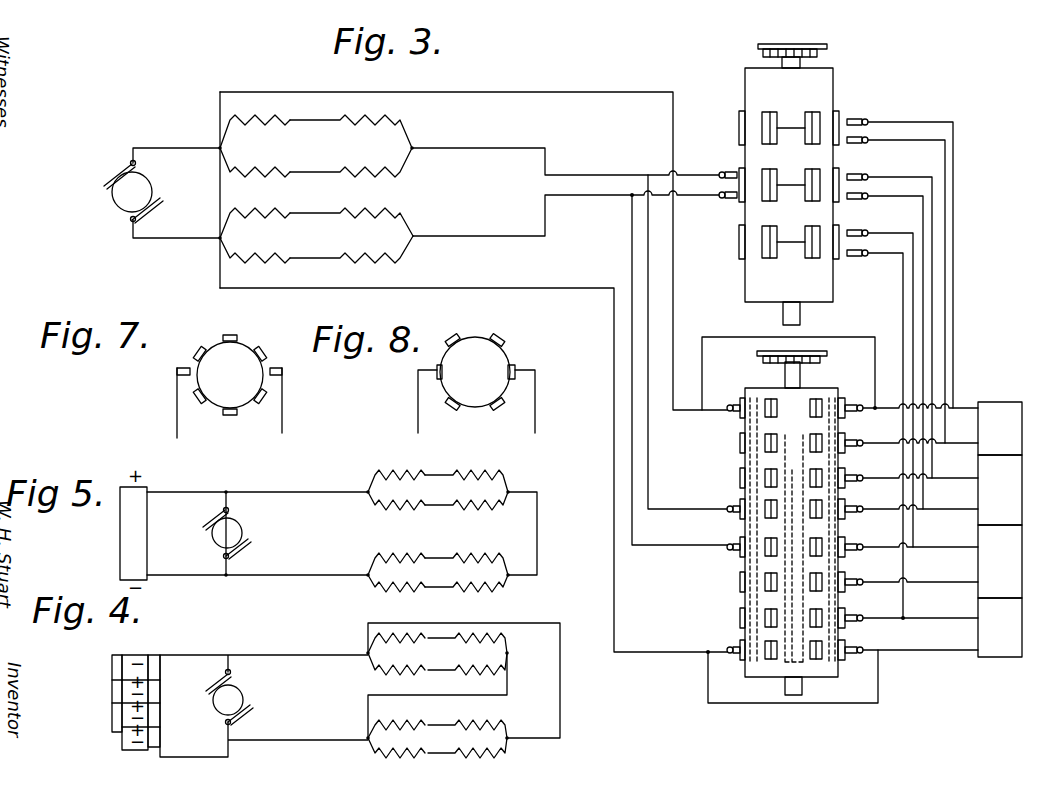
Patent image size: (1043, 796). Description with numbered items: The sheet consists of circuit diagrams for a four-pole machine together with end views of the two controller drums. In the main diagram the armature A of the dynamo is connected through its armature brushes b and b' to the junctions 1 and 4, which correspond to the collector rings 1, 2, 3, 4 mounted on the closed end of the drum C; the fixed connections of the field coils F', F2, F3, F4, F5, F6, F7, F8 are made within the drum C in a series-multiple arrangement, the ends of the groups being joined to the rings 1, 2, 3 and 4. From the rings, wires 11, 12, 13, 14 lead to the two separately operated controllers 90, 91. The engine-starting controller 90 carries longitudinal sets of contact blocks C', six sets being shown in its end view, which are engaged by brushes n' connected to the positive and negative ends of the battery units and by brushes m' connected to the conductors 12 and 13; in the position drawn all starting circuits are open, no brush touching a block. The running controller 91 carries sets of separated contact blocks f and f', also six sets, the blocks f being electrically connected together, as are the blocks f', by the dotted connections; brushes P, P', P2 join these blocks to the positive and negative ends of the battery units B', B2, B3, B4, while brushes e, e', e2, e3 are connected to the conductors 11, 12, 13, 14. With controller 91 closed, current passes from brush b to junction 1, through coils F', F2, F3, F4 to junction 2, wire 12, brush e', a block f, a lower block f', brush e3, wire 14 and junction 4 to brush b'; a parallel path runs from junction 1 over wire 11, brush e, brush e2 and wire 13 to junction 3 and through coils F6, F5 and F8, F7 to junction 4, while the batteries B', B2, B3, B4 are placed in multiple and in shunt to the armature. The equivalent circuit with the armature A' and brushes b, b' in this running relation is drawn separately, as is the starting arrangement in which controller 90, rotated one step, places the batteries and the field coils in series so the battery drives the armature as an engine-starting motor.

In FIG. 3, the collector ring 1 is at (218, 147).
In FIG. 4, the collector ring 1 is at (366, 652).
In FIG. 3, the collector ring 2 is at (414, 135).
In FIG. 5, the collector ring 2 is at (366, 490).
In FIG. 4, the collector ring 2 is at (509, 655).
In FIG. 5, the collector ring 3 is at (510, 578).
In FIG. 4, the collector ring 3 is at (509, 736).
In FIG. 3, the collector ring 4 is at (218, 239).
In FIG. 5, the collector ring 4 is at (366, 576).
In FIG. 4, the collector ring 4 is at (366, 737).
In FIG. 3, the wire 11 is at (578, 85).
In FIG. 3, the wire 12 is at (650, 511).
In FIG. 3, the wire 13 is at (458, 238).
In FIG. 3, the wire 14 is at (628, 652).
In FIG. 3, the engine-starting controller 90 is at (765, 95).
In FIG. 7, the engine-starting controller 90 is at (222, 388).
In FIG. 8, the running controller 91 is at (487, 385).
In FIG. 3, the motor A is at (139, 202).
In FIG. 5, the motor A' is at (239, 533).
In FIG. 3, the armature brush b is at (107, 172).
In FIG. 5, the armature brush b is at (202, 517).
In FIG. 3, the armature brush b' is at (158, 211).
In FIG. 5, the armature brush b' is at (250, 550).
In FIG. 7, the drum C is at (230, 375).
In FIG. 3, the contact block C' is at (778, 189).
In FIG. 3, the brush m' is at (712, 183).
In FIG. 3, the brush n' is at (863, 198).
In FIG. 3, the brush e is at (722, 396).
In FIG. 3, the brush e' is at (722, 498).
In FIG. 3, the brush e2 is at (727, 548).
In FIG. 3, the brush e3 is at (727, 653).
In FIG. 3, the contact block f is at (774, 523).
In FIG. 8, the contact block f is at (485, 367).
In FIG. 3, the contact block f' is at (778, 561).
In FIG. 3, the brush P is at (855, 391).
In FIG. 3, the brush P' is at (868, 532).
In FIG. 3, the terminal P2 is at (860, 475).
In FIG. 3, the battery unit B' is at (1000, 429).
In FIG. 3, the battery unit B2 is at (1000, 491).
In FIG. 3, the battery unit B3 is at (1000, 562).
In FIG. 3, the battery unit B4 is at (1000, 629).
In FIG. 3, the field coil F' is at (255, 118).
In FIG. 5, the field coil F' is at (396, 468).
In FIG. 4, the field coil F' is at (374, 627).
In FIG. 3, the field coil F2 is at (375, 114).
In FIG. 5, the field coil F2 is at (480, 470).
In FIG. 4, the field coil F2 is at (500, 637).
In FIG. 3, the field coil F3 is at (262, 177).
In FIG. 5, the field coil F3 is at (395, 507).
In FIG. 4, the field coil F3 is at (375, 672).
In FIG. 3, the field coil F4 is at (383, 174).
In FIG. 5, the field coil F4 is at (485, 512).
In FIG. 4, the field coil F4 is at (478, 675).
In FIG. 3, the field coil F5 is at (272, 208).
In FIG. 5, the field coil F5 is at (400, 556).
In FIG. 4, the field coil F5 is at (418, 722).
In FIG. 3, the field coil F6 is at (360, 209).
In FIG. 5, the field coil F6 is at (486, 554).
In FIG. 4, the field coil F6 is at (485, 720).
In FIG. 3, the field coil F7 is at (258, 262).
In FIG. 5, the field coil F7 is at (402, 590).
In FIG. 4, the field coil F7 is at (400, 757).
In FIG. 3, the field coil F8 is at (370, 262).
In FIG. 5, the field coil F8 is at (484, 590).
In FIG. 4, the field coil F8 is at (484, 757).